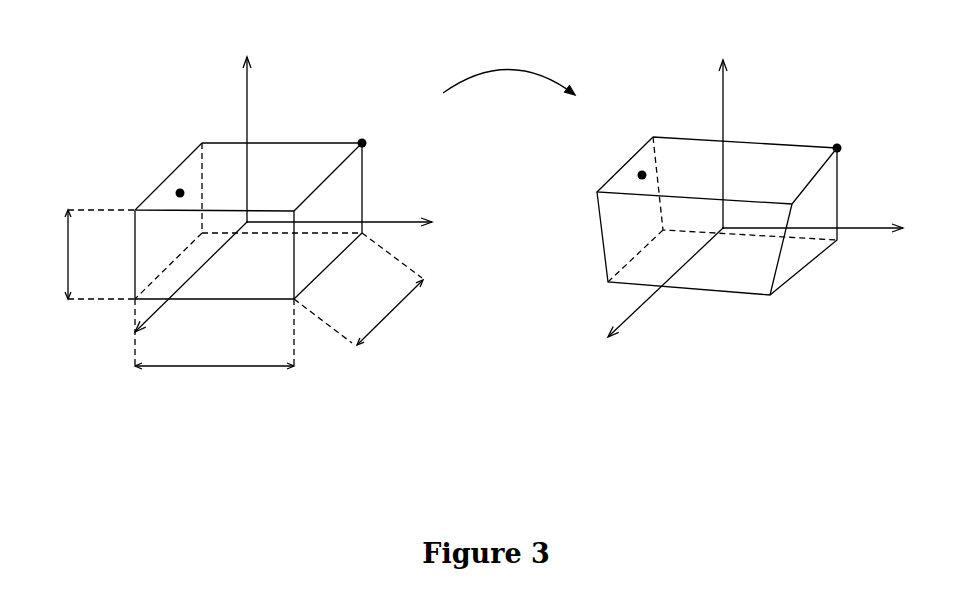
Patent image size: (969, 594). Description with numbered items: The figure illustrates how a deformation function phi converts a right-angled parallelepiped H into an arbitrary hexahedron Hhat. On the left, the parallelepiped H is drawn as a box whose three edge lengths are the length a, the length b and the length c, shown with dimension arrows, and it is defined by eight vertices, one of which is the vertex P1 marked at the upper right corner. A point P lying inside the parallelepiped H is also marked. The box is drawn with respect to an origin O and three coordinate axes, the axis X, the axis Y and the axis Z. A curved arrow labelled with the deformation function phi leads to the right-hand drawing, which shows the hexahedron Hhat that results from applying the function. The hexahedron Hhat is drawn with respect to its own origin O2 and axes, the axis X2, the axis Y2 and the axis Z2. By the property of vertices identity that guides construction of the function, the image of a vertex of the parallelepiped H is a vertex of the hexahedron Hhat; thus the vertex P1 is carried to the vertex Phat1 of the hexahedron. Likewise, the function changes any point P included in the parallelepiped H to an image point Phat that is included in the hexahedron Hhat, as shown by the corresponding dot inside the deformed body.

The right-angled parallelepiped H is at (287, 137).
The point P is at (164, 179).
The vertex P1 is at (382, 153).
The origin of coordinate system O is at (257, 241).
The X axis X is at (172, 295).
The Y axis Y is at (353, 223).
The Z axis Z is at (246, 119).
The length a is at (358, 289).
The length b is at (214, 350).
The length c is at (90, 254).
The deformation function phi is at (509, 66).
The hexahedron Hhat is at (768, 140).
The image point Phat is at (619, 146).
The vertex of hexahedron Phat1 is at (877, 136).
The Z axis (transformed frame) Z2 is at (721, 124).
The Y axis (transformed frame) Y2 is at (830, 226).
The X axis (transformed frame) X2 is at (651, 303).
The origin (transformed frame) O2 is at (734, 246).